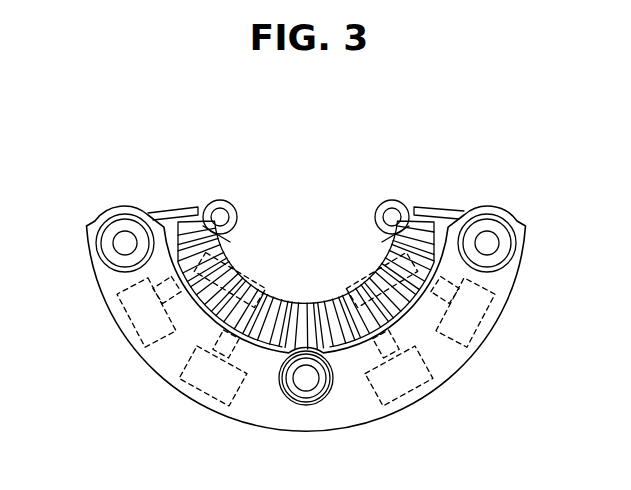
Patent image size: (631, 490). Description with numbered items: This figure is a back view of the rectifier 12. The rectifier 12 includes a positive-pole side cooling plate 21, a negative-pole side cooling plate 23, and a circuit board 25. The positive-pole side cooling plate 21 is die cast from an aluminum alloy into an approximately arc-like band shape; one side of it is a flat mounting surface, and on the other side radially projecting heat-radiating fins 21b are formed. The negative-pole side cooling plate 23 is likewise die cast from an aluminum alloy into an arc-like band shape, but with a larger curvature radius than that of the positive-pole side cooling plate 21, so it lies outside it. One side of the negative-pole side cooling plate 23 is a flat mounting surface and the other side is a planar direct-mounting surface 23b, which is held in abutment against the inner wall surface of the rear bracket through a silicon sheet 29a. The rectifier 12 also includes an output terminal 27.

The rectifier 12 is at (515, 338).
The positive-pole side cooling plate 21 is at (250, 279).
The heat-radiating fins 21b is at (222, 200).
The negative-pole side cooling plate 23 is at (180, 394).
The direct-mounting surface 23b is at (410, 323).
The circuit board 25 is at (405, 206).
The output terminal 27 is at (306, 380).
The silicon sheet 29a is at (99, 286).